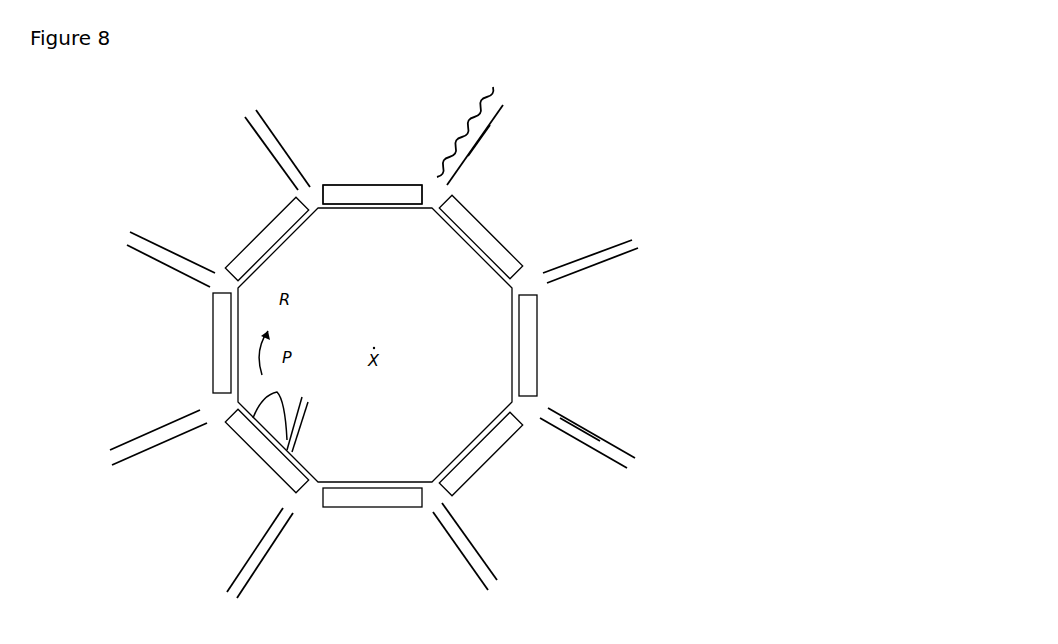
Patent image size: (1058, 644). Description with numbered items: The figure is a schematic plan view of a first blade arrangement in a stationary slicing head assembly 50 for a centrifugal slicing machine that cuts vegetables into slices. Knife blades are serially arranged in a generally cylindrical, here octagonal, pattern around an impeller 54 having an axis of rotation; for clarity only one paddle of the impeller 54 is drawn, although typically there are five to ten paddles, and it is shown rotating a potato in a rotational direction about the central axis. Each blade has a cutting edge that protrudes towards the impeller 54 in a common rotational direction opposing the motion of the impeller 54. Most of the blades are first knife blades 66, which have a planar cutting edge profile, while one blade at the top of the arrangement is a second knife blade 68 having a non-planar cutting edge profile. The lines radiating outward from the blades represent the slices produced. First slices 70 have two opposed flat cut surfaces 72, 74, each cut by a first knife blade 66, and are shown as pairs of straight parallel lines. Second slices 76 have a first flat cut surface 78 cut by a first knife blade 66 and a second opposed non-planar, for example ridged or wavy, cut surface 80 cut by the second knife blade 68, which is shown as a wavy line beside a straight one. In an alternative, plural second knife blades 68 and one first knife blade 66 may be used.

The slicing head assembly 50 is at (592, 311).
The impeller 54 is at (289, 422).
The first knife blades 66 is at (490, 425).
The second knife blade 68 is at (373, 185).
The first slices 70 is at (582, 427).
The flat cut surface 72 is at (585, 432).
The flat cut surface 74 is at (575, 442).
The second slices 76 is at (478, 133).
The first flat cut surface 78 is at (478, 148).
The non-planar cut surface 80 is at (465, 128).